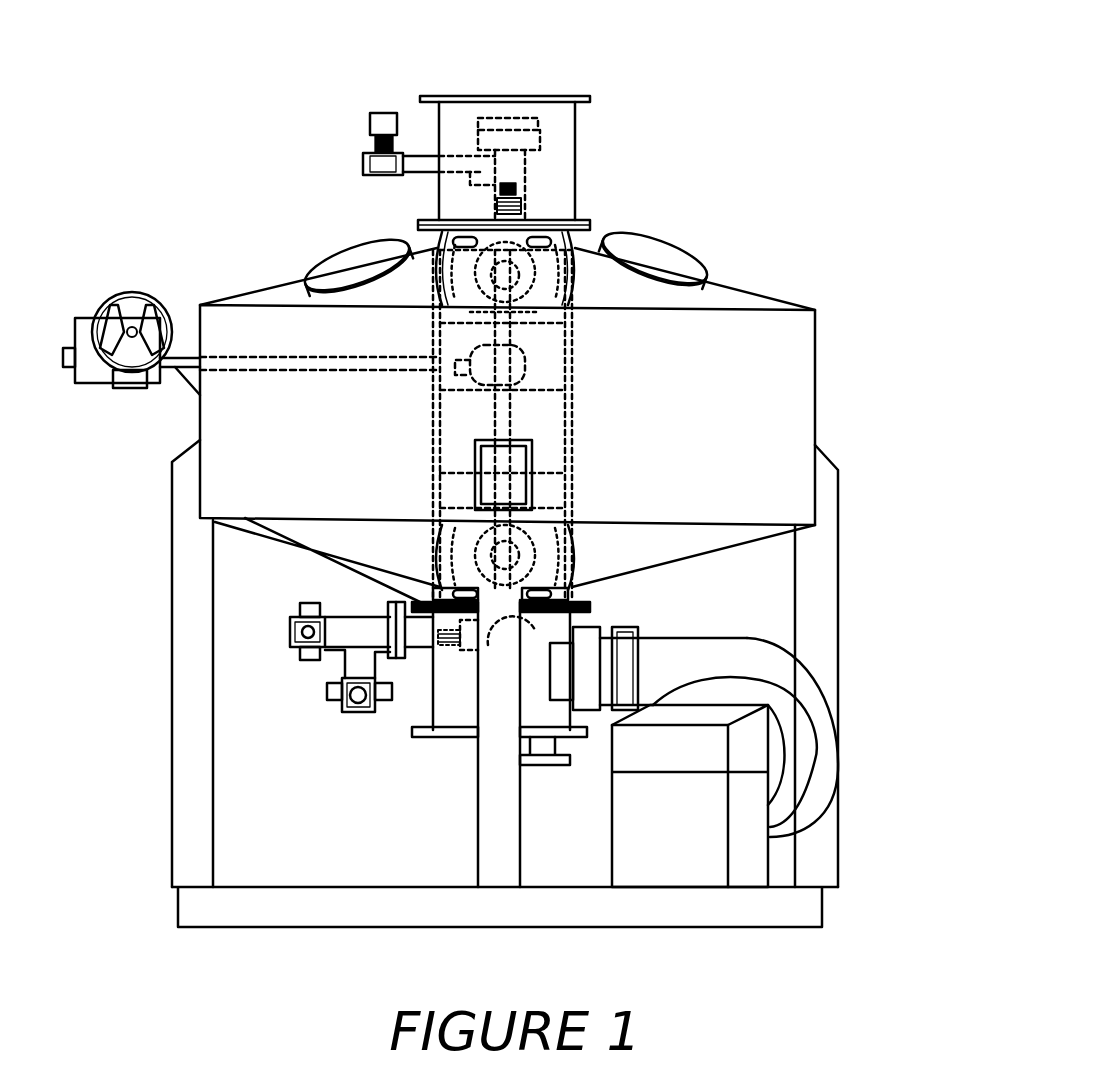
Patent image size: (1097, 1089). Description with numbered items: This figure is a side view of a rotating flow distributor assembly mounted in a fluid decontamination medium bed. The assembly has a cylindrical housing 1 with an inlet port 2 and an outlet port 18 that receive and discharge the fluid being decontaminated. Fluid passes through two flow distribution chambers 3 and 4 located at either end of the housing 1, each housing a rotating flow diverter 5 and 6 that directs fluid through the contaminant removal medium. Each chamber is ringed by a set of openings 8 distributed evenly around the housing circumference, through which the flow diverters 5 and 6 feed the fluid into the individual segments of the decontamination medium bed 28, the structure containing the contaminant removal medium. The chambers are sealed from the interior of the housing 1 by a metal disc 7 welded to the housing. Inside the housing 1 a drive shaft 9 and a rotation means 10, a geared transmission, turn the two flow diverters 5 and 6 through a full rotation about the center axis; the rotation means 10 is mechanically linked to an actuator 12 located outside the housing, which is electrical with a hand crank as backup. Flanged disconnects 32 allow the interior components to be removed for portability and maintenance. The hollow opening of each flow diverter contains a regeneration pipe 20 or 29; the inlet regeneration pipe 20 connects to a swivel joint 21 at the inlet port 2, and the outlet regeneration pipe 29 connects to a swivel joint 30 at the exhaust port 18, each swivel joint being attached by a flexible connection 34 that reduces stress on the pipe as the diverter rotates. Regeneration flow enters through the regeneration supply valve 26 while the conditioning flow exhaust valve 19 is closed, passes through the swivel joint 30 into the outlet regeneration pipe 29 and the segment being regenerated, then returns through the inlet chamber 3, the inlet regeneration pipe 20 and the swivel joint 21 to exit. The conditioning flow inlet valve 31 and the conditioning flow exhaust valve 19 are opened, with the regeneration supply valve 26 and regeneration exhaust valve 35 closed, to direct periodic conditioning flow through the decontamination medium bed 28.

The cylindrical housing 1 is at (571, 418).
The inlet port 2 is at (432, 705).
The inlet flow distribution chamber 3 is at (572, 593).
The outlet flow distribution chamber 4 is at (438, 250).
The inlet flow diverter 5 is at (566, 530).
The outlet flow diverter 6 is at (435, 244).
The metal disc 7 is at (525, 478).
The openings 8 is at (438, 262).
The drive shaft 9 is at (508, 478).
The rotation means 10 is at (528, 362).
The actuator 12 is at (123, 294).
The outlet port 18 is at (590, 98).
The conditioning flow exhaust valve 19 is at (535, 120).
The inlet regeneration pipe 20 is at (510, 628).
The inlet swivel joint 21 is at (243, 517).
The regeneration supply valve 26 is at (367, 113).
The decontamination medium bed 28 is at (817, 333).
The outlet regeneration pipe 29 is at (525, 187).
The outlet swivel joint 30 is at (703, 276).
The conditioning flow inlet valve 31 is at (335, 690).
The flanged disconnects 32 is at (423, 600).
The flexible connection 34 is at (522, 205).
The regeneration exhaust valve 35 is at (298, 617).